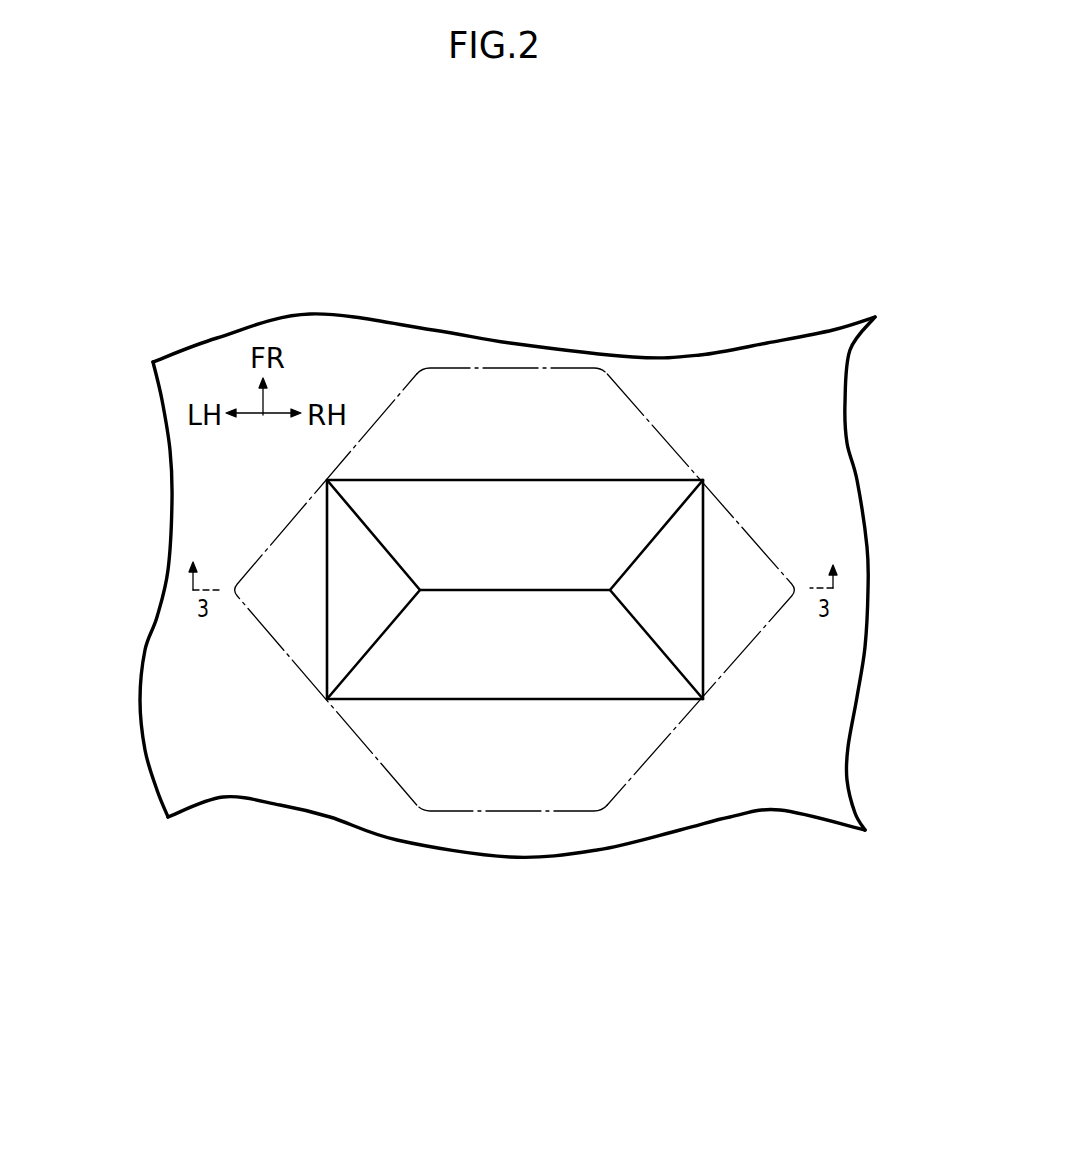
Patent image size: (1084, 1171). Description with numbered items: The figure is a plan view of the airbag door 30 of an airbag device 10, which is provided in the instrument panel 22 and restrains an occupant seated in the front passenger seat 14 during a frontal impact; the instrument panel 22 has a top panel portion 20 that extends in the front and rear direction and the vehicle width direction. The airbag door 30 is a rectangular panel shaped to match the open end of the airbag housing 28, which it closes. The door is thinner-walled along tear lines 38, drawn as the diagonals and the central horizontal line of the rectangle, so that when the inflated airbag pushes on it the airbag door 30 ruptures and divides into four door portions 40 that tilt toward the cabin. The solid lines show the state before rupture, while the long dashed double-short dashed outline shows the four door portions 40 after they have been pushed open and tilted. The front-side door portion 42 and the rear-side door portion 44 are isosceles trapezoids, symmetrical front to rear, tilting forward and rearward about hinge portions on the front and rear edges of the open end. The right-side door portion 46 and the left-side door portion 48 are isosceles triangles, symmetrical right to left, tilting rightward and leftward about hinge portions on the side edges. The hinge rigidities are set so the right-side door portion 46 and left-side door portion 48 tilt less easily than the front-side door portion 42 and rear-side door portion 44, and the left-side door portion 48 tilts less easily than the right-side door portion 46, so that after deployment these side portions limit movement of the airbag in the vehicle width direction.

The airbag device 10 is at (501, 615).
The front passenger seat 14 is at (270, 771).
The top panel portion 20 is at (543, 585).
The instrument panel 22 is at (820, 457).
The airbag housing 28 is at (567, 507).
The airbag door 30 is at (636, 603).
The tear lines 38 is at (380, 541).
The door portions 40 is at (501, 618).
The front-side door portion 42 is at (427, 497).
The rear-side door portion 44 is at (516, 667).
The right-side door portion 46 is at (684, 572).
The left-side door portion 48 is at (343, 622).